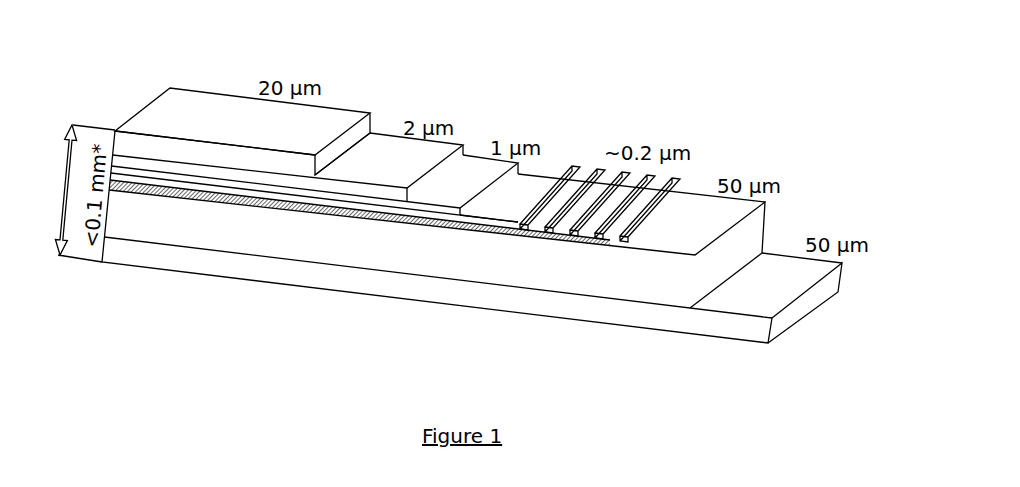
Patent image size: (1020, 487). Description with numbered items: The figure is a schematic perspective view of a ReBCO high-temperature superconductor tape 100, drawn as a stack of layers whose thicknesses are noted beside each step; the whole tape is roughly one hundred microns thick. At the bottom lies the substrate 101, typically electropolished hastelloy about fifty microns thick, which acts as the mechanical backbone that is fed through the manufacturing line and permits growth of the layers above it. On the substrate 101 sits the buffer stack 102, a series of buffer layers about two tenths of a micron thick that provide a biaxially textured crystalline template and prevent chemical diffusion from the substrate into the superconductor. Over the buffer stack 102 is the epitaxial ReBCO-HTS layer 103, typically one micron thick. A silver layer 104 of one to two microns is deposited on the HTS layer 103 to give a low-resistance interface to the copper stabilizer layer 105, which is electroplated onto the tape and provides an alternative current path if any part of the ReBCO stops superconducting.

The HTS tape 100 is at (293, 316).
The substrate 101 is at (709, 220).
The buffer stack 102 is at (593, 160).
The ReBCO-HTS layer 103 is at (480, 172).
The silver layer 104 is at (397, 152).
The copper stabilizer layer 105 is at (798, 272).